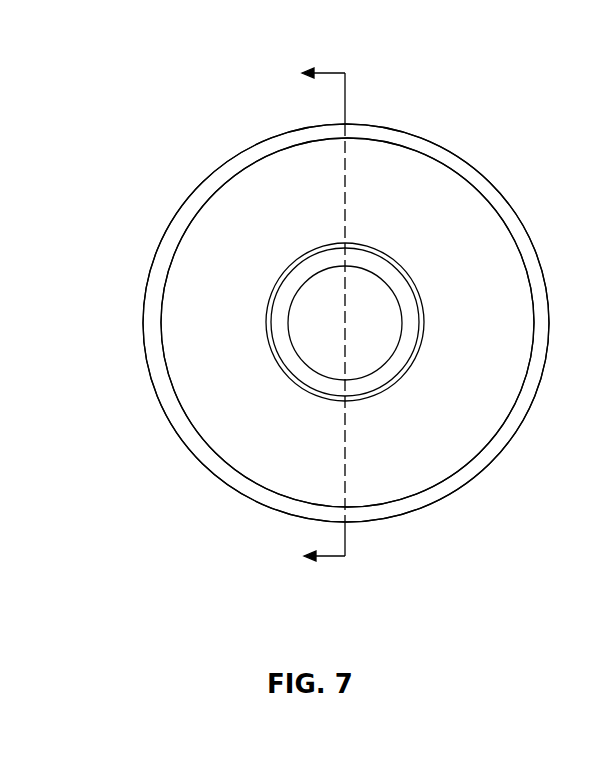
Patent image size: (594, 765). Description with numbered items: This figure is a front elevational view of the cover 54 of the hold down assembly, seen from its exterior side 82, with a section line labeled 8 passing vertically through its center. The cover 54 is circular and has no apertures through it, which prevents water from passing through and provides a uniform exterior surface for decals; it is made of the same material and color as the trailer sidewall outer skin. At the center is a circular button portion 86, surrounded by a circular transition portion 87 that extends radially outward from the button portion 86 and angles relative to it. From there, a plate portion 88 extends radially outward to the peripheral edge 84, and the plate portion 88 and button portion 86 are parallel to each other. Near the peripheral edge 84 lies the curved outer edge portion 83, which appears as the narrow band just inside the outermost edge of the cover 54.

The cover 54 is at (116, 218).
The exterior side 82 is at (289, 452).
The outer edge portion 83 is at (178, 415).
The peripheral edge 84 is at (198, 464).
The button portion 86 is at (298, 311).
The transition portion 87 is at (318, 264).
The plate portion 88 is at (246, 203).
The section line 8- 8 is at (312, 315).